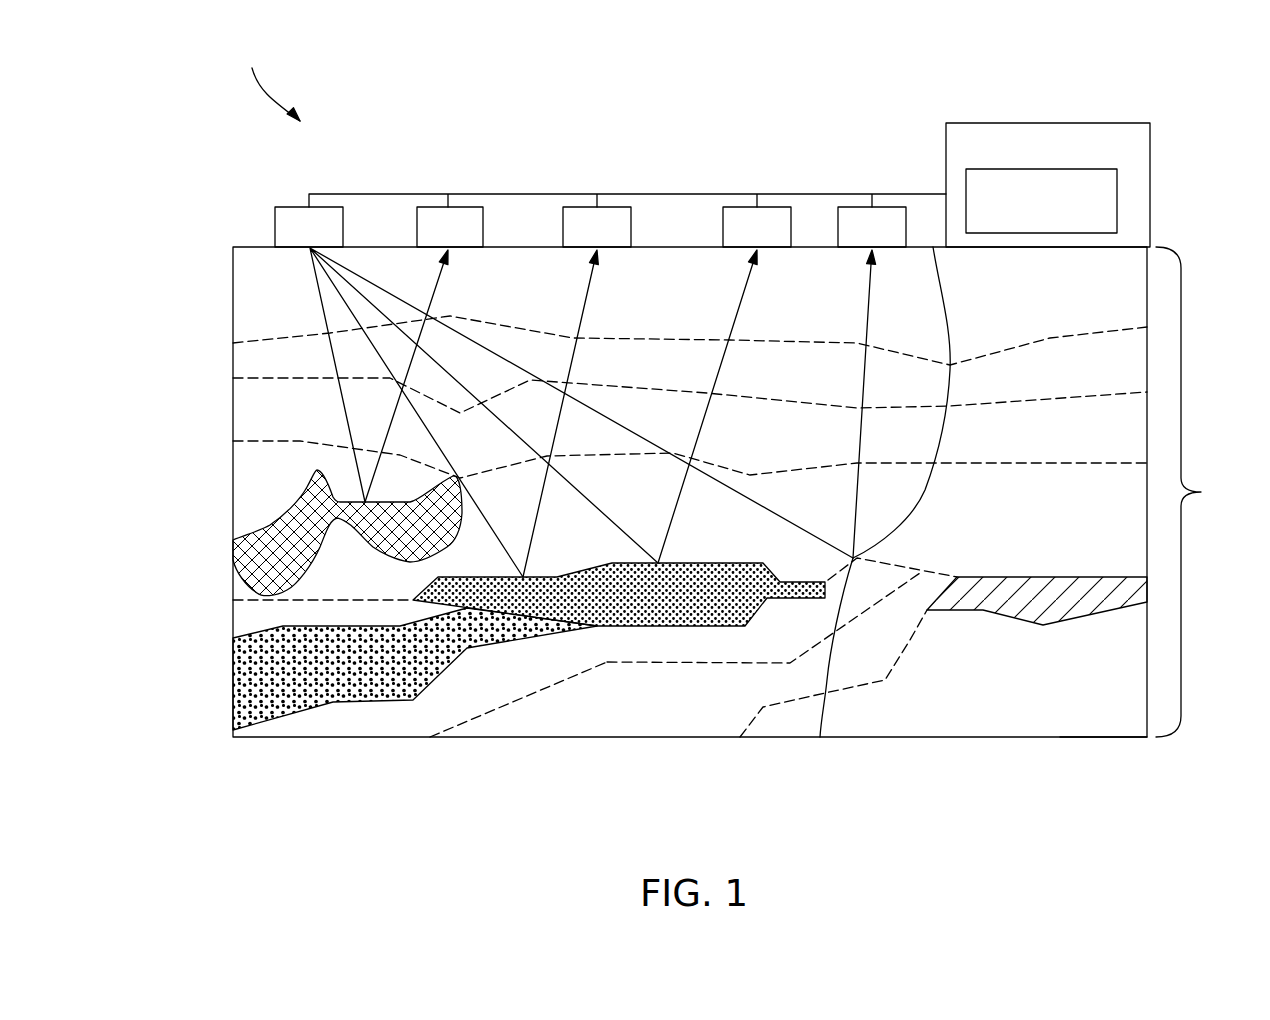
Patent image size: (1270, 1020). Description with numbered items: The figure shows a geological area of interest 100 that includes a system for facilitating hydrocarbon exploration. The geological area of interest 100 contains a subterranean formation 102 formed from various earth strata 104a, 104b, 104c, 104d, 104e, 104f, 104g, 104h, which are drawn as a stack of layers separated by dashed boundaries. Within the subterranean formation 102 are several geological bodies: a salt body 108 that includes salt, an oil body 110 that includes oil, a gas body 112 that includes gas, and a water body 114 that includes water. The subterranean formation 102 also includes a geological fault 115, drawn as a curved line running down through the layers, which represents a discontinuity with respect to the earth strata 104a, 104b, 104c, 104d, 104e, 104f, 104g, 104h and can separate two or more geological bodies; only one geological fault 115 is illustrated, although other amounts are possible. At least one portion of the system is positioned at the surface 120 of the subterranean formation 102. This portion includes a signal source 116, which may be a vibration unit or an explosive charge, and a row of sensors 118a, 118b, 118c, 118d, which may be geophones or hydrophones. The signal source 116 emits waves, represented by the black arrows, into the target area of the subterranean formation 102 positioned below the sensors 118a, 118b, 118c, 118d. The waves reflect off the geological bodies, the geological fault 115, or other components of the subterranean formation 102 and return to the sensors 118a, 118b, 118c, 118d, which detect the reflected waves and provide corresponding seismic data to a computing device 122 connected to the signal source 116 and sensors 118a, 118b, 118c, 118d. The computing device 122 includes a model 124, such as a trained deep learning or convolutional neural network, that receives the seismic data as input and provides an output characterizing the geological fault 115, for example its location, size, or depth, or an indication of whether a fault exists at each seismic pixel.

The geological area of interest 100 is at (263, 78).
The subterranean formation 102 is at (1196, 492).
The earth stratum 104a is at (250, 315).
The earth stratum 104b is at (250, 368).
The earth stratum 104c is at (250, 427).
The earth stratum 104d is at (250, 500).
The earth stratum 104e is at (250, 618).
The earth stratum 104f is at (353, 725).
The earth stratum 104g is at (633, 725).
The earth stratum 104h is at (958, 725).
The salt body 108 is at (288, 527).
The oil body 110 is at (725, 572).
The gas body 112 is at (1043, 587).
The water body 114 is at (427, 662).
The geological fault 115 is at (946, 305).
The signal source 116 is at (324, 241).
The sensor 118a is at (471, 241).
The sensor 118b is at (620, 241).
The sensor 118c is at (779, 241).
The sensor 118d is at (895, 241).
The surface 120 is at (253, 246).
The computing device 122 is at (946, 140).
The model 124 is at (966, 188).